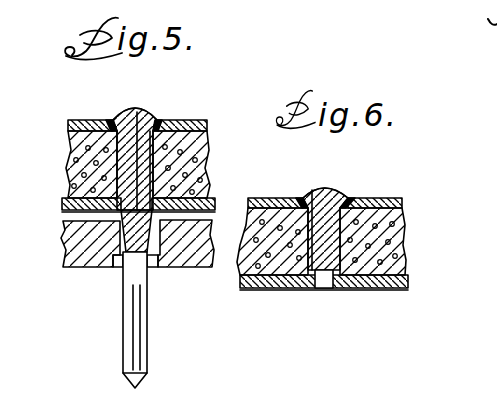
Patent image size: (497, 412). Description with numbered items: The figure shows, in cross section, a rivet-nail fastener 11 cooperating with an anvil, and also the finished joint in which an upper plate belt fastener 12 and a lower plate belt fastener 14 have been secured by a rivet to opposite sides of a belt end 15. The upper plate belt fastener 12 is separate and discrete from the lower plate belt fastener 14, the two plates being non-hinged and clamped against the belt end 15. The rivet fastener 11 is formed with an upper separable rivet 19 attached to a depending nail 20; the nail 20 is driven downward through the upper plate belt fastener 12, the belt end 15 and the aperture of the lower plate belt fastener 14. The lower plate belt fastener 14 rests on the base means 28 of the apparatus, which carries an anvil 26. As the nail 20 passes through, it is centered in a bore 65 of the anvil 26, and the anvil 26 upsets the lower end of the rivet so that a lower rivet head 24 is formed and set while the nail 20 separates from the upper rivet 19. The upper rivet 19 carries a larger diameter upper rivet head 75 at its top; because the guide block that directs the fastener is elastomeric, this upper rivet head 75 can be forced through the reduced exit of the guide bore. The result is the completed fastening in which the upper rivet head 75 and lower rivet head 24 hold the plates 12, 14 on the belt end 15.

In FIG. 5, the rivet fastener 11 is at (153, 108).
In FIG. 5, the upper plate belt fastener 12 is at (197, 120).
In FIG. 6, the upper plate belt fastener 12 is at (383, 198).
In FIG. 5, the lower plate belt fastener 14 is at (210, 213).
In FIG. 6, the lower plate belt fastener 14 is at (400, 291).
In FIG. 5, the belt end 15 is at (212, 156).
In FIG. 6, the belt end 15 is at (410, 215).
In FIG. 5, the upper separable rivet 19 is at (117, 147).
In FIG. 6, the upper separable rivet 19 is at (331, 197).
In FIG. 5, the nail 20 is at (147, 288).
In FIG. 5, the lower rivet head 24 is at (63, 199).
In FIG. 6, the lower rivet head 24 is at (338, 291).
In FIG. 5, the anvil 26 is at (65, 222).
In FIG. 5, the base means 28 is at (102, 262).
In FIG. 5, the bore 65 is at (125, 275).
In FIG. 5, the upper rivet head 75 is at (128, 147).
In FIG. 6, the upper rivet head 75 is at (330, 165).